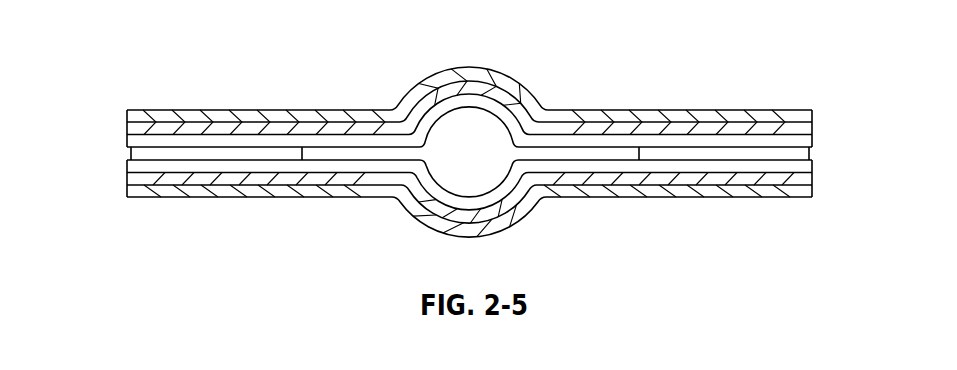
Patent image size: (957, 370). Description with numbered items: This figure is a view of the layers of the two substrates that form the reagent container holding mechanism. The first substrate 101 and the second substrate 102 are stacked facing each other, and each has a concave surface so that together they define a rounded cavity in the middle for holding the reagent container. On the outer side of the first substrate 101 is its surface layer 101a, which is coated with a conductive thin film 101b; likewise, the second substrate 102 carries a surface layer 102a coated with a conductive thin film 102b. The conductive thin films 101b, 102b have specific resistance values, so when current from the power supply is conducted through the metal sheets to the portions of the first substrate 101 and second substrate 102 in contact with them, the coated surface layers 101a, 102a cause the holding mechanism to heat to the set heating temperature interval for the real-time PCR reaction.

The conductive thin film 101b is at (812, 109).
The surface layer of the first substrate 101a is at (809, 128).
The first substrate 101 is at (812, 139).
The second substrate 102 is at (812, 167).
The surface layer of the second substrate 102a is at (810, 179).
The conductive thin film 102b is at (812, 198).